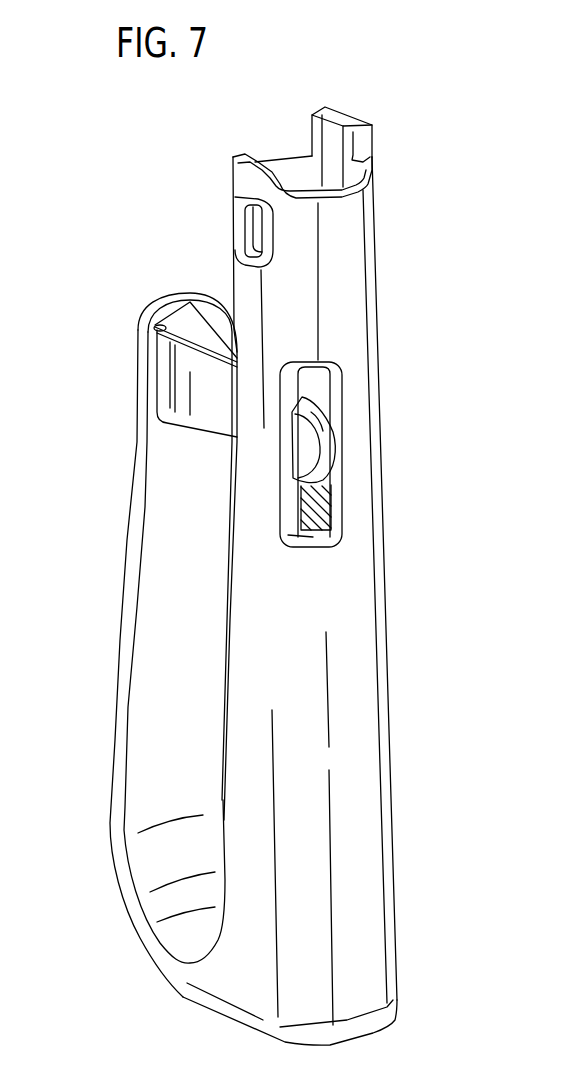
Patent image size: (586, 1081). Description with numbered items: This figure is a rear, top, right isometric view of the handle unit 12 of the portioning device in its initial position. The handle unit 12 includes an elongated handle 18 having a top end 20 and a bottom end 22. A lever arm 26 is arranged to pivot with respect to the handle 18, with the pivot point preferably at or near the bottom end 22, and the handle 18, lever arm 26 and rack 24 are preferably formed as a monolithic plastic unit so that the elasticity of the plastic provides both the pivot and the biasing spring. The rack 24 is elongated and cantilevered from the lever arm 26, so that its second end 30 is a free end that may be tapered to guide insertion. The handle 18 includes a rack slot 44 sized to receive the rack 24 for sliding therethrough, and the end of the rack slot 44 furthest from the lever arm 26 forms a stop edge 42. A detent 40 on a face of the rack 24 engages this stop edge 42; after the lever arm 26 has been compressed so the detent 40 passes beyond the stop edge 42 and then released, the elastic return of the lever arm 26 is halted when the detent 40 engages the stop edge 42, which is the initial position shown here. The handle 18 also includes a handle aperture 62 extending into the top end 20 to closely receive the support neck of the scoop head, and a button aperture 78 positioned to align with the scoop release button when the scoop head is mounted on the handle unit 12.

The handle unit 12 is at (88, 798).
The handle 18 is at (343, 285).
The top end 20 is at (373, 193).
The bottom end 22 is at (398, 1000).
The rack 24 is at (202, 385).
The lever arm 26 is at (155, 645).
The second end 30 is at (327, 448).
The detent 40 is at (293, 447).
The stop edge 42 is at (292, 500).
The rack slot 44 is at (308, 527).
The handle aperture 62 is at (302, 175).
The button aperture 78 is at (262, 229).